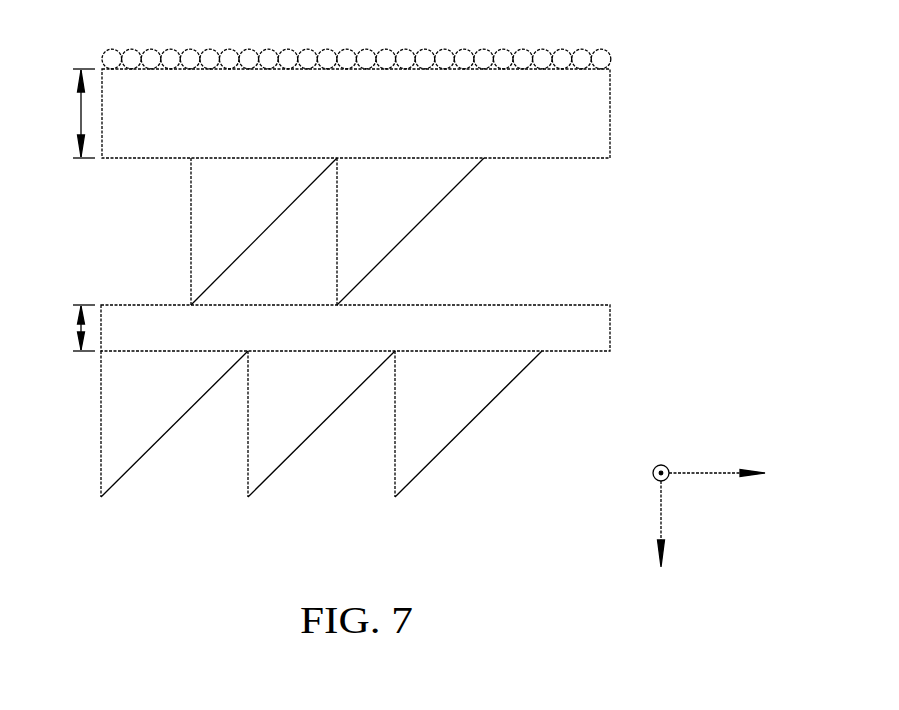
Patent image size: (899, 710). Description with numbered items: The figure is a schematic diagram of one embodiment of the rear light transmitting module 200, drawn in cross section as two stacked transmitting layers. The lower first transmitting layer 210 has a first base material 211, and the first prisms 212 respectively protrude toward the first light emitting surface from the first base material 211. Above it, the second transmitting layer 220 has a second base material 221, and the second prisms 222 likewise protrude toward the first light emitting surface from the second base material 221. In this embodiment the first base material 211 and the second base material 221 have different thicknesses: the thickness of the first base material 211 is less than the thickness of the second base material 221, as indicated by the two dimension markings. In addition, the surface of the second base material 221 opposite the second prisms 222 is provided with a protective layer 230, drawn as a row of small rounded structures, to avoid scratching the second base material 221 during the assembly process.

The rear light transmitting module 200 is at (70, 35).
The protective layer 230 is at (604, 58).
The second transmitting layer 220 is at (413, 187).
The second base material 221 is at (603, 136).
The second prisms 222 is at (442, 183).
The first transmitting layer 210 is at (412, 401).
The first base material 211 is at (603, 338).
The first prisms 212 is at (441, 384).